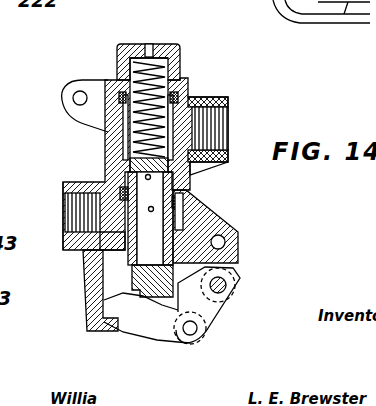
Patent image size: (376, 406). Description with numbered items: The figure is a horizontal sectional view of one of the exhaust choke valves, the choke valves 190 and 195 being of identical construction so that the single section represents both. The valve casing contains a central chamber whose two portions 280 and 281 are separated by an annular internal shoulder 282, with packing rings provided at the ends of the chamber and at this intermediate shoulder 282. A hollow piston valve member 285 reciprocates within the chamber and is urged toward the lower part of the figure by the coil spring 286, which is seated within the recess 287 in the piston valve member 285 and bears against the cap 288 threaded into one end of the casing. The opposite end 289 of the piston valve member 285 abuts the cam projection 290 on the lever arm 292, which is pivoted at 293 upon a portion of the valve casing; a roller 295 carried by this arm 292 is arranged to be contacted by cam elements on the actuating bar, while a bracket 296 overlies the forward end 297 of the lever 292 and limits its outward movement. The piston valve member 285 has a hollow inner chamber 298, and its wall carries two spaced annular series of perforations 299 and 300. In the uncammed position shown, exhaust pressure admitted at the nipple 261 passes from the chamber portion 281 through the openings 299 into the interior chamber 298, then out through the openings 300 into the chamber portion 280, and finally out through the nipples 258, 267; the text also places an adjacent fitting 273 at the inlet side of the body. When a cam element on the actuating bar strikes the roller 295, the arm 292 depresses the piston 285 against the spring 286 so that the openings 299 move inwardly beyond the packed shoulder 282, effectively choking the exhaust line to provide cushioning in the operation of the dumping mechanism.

The choke valve 190 is at (108, 62).
The choke valve 195 is at (62, 91).
The cap 288 is at (157, 60).
The coil spring 286 is at (178, 68).
The recess 287 is at (180, 84).
The nipple 258 is at (190, 108).
The nipple 267 is at (246, 125).
The perforations 300 is at (196, 148).
The annular internal shoulder 282 is at (191, 174).
The piston valve member 285 is at (134, 136).
The chamber portion 280 is at (138, 163).
The cam projection 290 is at (162, 298).
The opposite end 289 is at (147, 293).
The chamber portion 281 is at (178, 220).
The hollow inner chamber 298 is at (226, 243).
The lever arm 292 is at (214, 304).
The pivot 293 is at (226, 283).
The roller 295 is at (208, 338).
The nipple 261 is at (53, 207).
The left port wall 273 is at (32, 216).
The perforations 299 is at (107, 228).
The forward end 297 is at (112, 305).
The bracket 296 is at (103, 331).